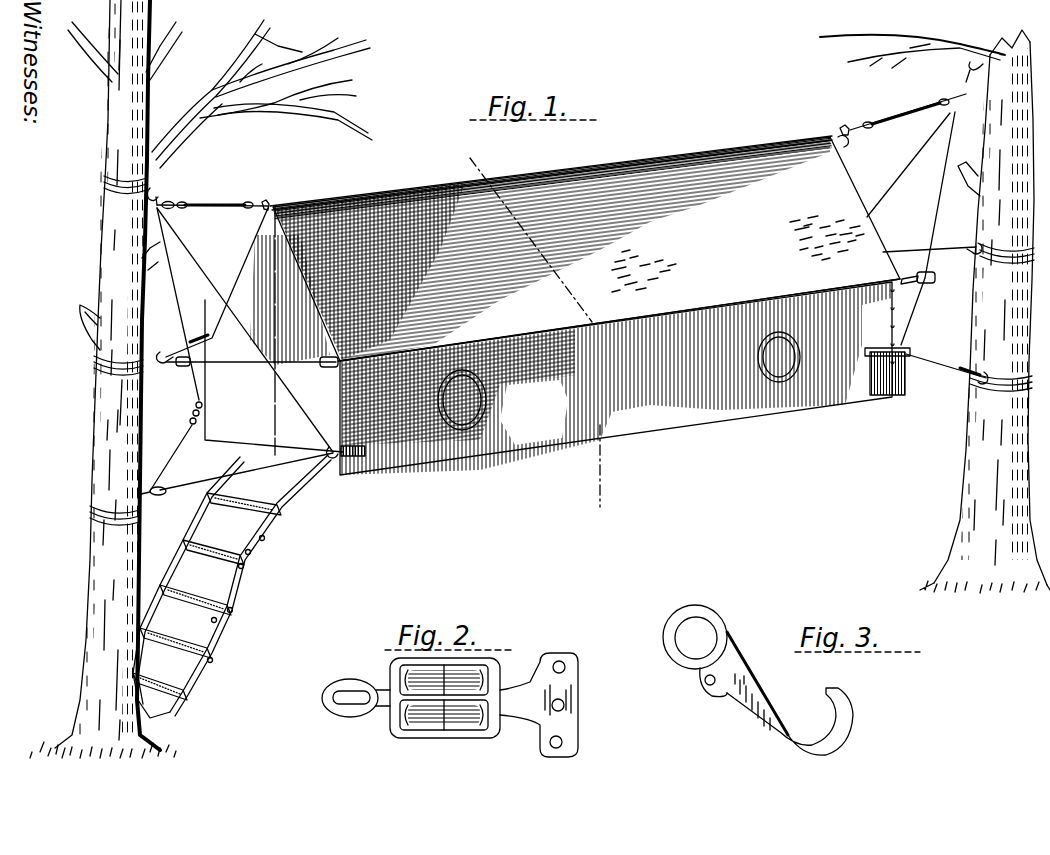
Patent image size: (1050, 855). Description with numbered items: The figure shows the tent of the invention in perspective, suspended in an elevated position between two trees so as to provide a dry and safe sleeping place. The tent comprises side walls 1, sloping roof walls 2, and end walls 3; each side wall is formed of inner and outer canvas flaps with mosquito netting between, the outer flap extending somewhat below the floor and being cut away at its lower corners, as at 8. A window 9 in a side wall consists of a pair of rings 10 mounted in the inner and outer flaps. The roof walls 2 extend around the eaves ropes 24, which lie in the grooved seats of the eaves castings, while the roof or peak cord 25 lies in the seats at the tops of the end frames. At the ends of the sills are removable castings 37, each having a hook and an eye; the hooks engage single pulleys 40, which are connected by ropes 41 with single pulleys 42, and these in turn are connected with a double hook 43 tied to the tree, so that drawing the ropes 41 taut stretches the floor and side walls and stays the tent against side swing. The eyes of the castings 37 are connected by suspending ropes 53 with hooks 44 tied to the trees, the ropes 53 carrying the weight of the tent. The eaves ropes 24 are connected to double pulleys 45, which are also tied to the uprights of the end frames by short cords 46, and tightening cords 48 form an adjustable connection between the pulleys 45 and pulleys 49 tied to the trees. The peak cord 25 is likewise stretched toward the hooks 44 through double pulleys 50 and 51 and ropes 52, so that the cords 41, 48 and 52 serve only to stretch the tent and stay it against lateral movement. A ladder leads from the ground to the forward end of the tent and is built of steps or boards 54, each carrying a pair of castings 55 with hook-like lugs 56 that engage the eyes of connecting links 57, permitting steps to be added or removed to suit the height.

In FIG. 1, the side walls 1 is at (596, 430).
In FIG. 1, the sloping roof walls 2 is at (586, 249).
In FIG. 1, the end walls 3 is at (290, 430).
In FIG. 1, the cut-away lower corner of outer flap 8 is at (352, 460).
In FIG. 1, the window 9 is at (466, 414).
In FIG. 1, the window rings 10 is at (533, 333).
In FIG. 1, the eaves ropes 24 is at (333, 359).
In FIG. 1, the roof or peak cord 25 is at (278, 205).
In FIG. 1, the removable rings or castings 37 is at (872, 397).
In FIG. 1, the single pulleys 40 is at (195, 407).
In FIG. 1, the ropes or cords 41 is at (206, 482).
In FIG. 1, the single pulleys 42 is at (158, 497).
In FIG. 1, the double hook 43 is at (975, 382).
In FIG. 1, the hooks 44 is at (154, 191).
In FIG. 3, the hooks 44 is at (728, 662).
In FIG. 1, the double pulley 45 is at (189, 368).
In FIG. 2, the double pulley 45 is at (510, 688).
In FIG. 1, the short cords 46 is at (846, 137).
In FIG. 1, the tightening cords 48 is at (241, 365).
In FIG. 1, the pulleys 49 is at (163, 351).
In FIG. 1, the double pulley 50 is at (268, 203).
In FIG. 1, the double pulley 51 is at (183, 204).
In FIG. 1, the cords or ropes 52 is at (220, 204).
In FIG. 1, the suspending cords or ropes 53 is at (228, 296).
In FIG. 1, the steps or boards 54 is at (207, 596).
In FIG. 1, the castings 55 is at (243, 568).
In FIG. 1, the hook-like lugs 56 is at (252, 553).
In FIG. 1, the connecting links 57 is at (263, 538).